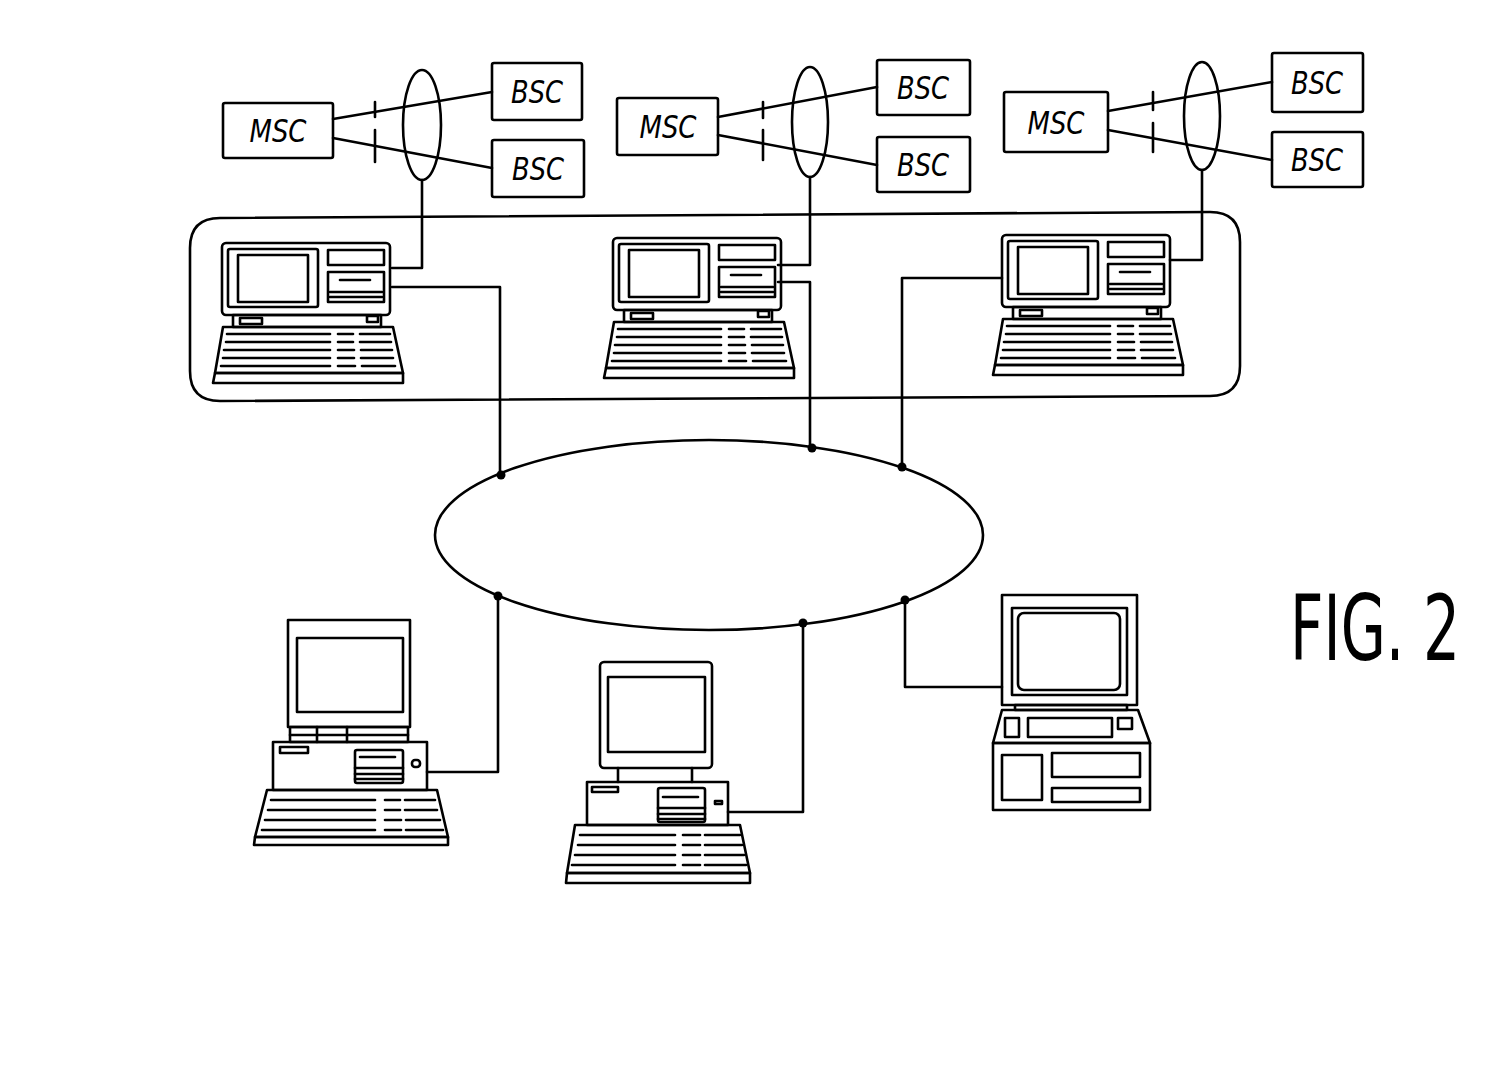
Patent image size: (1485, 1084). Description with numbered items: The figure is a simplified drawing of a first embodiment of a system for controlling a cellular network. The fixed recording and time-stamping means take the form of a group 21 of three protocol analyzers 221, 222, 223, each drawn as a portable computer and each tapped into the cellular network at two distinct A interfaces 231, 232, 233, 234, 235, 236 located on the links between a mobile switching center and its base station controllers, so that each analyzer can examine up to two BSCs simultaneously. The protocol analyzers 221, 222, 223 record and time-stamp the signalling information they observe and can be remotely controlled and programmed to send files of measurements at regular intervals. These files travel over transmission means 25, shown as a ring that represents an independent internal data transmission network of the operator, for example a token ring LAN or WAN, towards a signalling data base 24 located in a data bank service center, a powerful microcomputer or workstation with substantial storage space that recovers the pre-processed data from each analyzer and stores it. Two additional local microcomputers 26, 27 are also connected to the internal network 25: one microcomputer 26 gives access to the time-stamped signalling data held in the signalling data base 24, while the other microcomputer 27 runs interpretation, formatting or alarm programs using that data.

The group of protocol analyzers 21 is at (1242, 262).
The protocol analyzer 221 is at (312, 368).
The protocol analyzer 222 is at (620, 375).
The protocol analyzer 223 is at (1085, 370).
The A interface 231 is at (375, 153).
The A interface 232 is at (372, 109).
The A interface 233 is at (763, 152).
The A interface 234 is at (762, 105).
The A interface 235 is at (1153, 145).
The A interface 236 is at (1153, 100).
The signalling data base 24 is at (995, 773).
The transmission means 25 is at (958, 493).
The local microcomputer 26 is at (411, 838).
The local microcomputer 27 is at (718, 863).